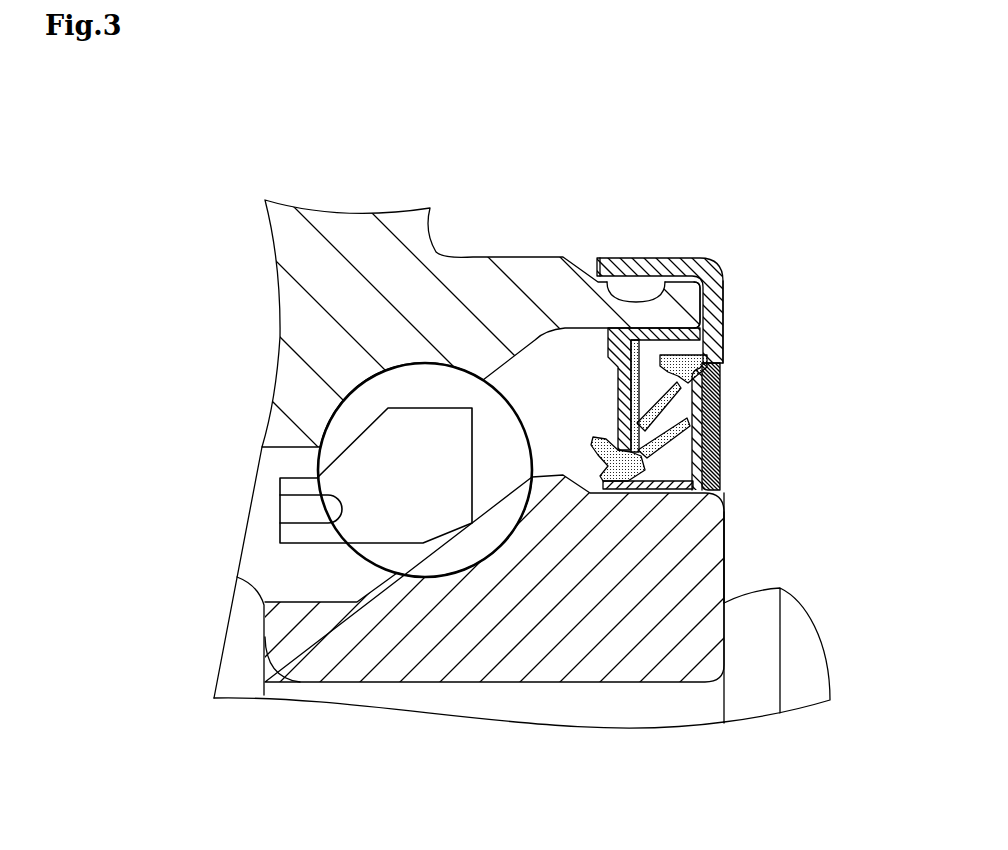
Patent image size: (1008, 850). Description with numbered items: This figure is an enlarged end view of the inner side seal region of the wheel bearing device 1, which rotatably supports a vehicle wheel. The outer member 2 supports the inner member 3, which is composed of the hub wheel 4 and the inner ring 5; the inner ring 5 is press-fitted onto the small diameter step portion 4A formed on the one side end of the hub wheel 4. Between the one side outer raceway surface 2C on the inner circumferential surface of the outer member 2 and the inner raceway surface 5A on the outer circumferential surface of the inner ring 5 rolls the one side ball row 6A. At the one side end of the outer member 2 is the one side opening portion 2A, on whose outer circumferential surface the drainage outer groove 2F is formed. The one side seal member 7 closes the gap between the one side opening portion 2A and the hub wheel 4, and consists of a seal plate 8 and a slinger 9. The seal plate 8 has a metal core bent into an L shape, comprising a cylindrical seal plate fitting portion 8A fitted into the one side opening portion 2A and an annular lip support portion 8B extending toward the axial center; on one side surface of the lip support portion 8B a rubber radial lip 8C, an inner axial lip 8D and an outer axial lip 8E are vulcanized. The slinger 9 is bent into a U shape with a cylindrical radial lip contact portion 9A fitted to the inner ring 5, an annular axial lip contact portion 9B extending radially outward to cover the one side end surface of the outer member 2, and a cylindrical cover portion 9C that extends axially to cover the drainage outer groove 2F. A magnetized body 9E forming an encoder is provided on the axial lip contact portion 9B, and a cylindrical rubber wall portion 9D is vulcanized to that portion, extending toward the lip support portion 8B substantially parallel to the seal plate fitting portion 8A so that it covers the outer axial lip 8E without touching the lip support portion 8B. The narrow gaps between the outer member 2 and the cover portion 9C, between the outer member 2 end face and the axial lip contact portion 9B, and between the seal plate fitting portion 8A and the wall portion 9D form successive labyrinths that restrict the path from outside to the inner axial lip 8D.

The wheel bearing device 1 is at (126, 105).
The outer member 2 is at (566, 161).
The one side opening portion 2A is at (575, 332).
The one side outer raceway surface 2C is at (437, 370).
The drainage outer groove 2F is at (648, 331).
The inner member 3 is at (791, 491).
The hub wheel 4 is at (818, 682).
The small diameter step portion 4A is at (645, 720).
The inner ring 5 is at (721, 572).
The inner raceway surface 5A is at (430, 573).
The one side ball row 6A is at (342, 428).
The one side seal member 7 is at (772, 222).
The seal plate 8 is at (644, 347).
The seal plate fitting portion 8A is at (637, 333).
The lip support portion 8B is at (621, 401).
The radial lip 8C is at (613, 472).
The inner axial lip 8D is at (680, 421).
The outer axial lip 8E is at (680, 388).
The slinger 9 is at (559, 305).
The radial lip contact portion 9A is at (644, 488).
The axial lip contact portion 9B is at (718, 309).
The cover portion 9C is at (672, 263).
The wall portion 9D is at (617, 372).
The magnetized body 9E is at (712, 468).